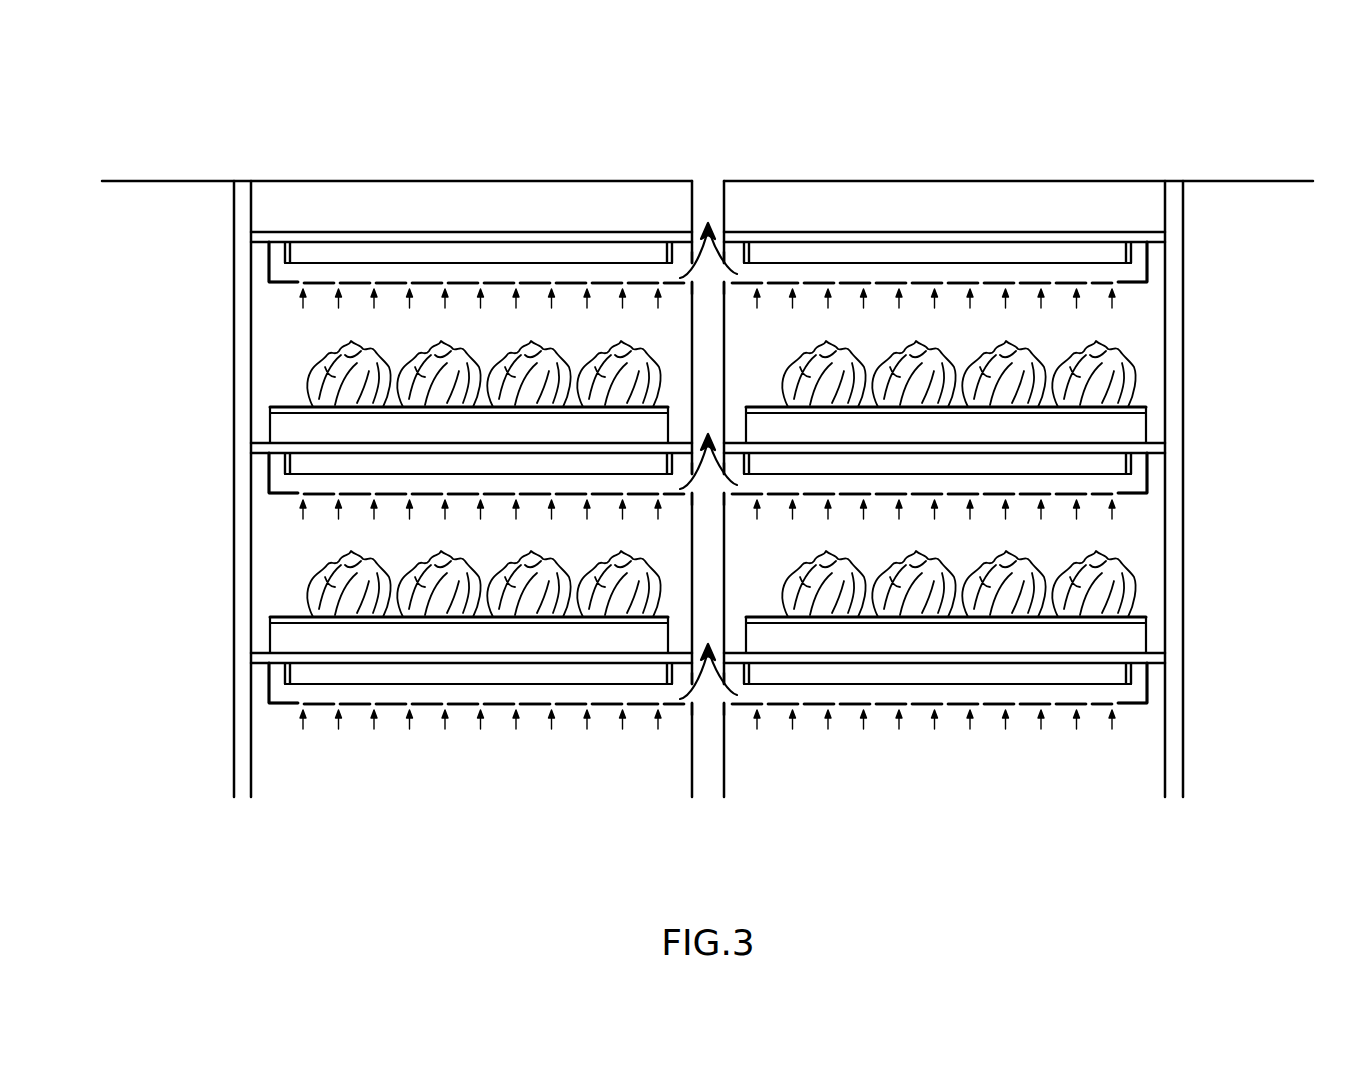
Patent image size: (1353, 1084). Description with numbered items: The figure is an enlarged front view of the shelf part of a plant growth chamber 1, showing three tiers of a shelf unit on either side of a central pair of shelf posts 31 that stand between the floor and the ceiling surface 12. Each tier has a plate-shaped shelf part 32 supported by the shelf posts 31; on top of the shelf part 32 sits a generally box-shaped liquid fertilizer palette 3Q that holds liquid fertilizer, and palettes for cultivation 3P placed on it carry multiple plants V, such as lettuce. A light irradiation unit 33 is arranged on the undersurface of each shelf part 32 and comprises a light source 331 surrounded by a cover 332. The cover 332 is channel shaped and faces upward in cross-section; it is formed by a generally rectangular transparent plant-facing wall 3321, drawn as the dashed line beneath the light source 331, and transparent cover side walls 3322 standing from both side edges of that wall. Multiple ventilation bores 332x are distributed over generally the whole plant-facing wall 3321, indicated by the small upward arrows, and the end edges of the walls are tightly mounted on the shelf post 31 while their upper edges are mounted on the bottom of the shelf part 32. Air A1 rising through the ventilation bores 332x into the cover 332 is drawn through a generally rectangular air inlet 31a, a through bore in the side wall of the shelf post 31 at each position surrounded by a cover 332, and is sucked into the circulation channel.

The plant growth chamber 1 is at (462, 142).
The ceiling surface 12 is at (120, 183).
The shelf post 31 is at (232, 203).
The air inlet 31a is at (692, 282).
The shelf part 32 is at (1162, 443).
The light irradiation unit 33 is at (257, 267).
The light source 331 is at (432, 264).
The cover 332 is at (158, 302).
The plant-facing wall 3321 is at (302, 284).
The cover side wall 3322 is at (272, 283).
The ventilation bore 332x is at (300, 286).
The palette for cultivation 3P is at (270, 408).
The liquid fertilizer palette 3Q is at (270, 437).
The plant V is at (300, 400).
The air A1 is at (708, 453).